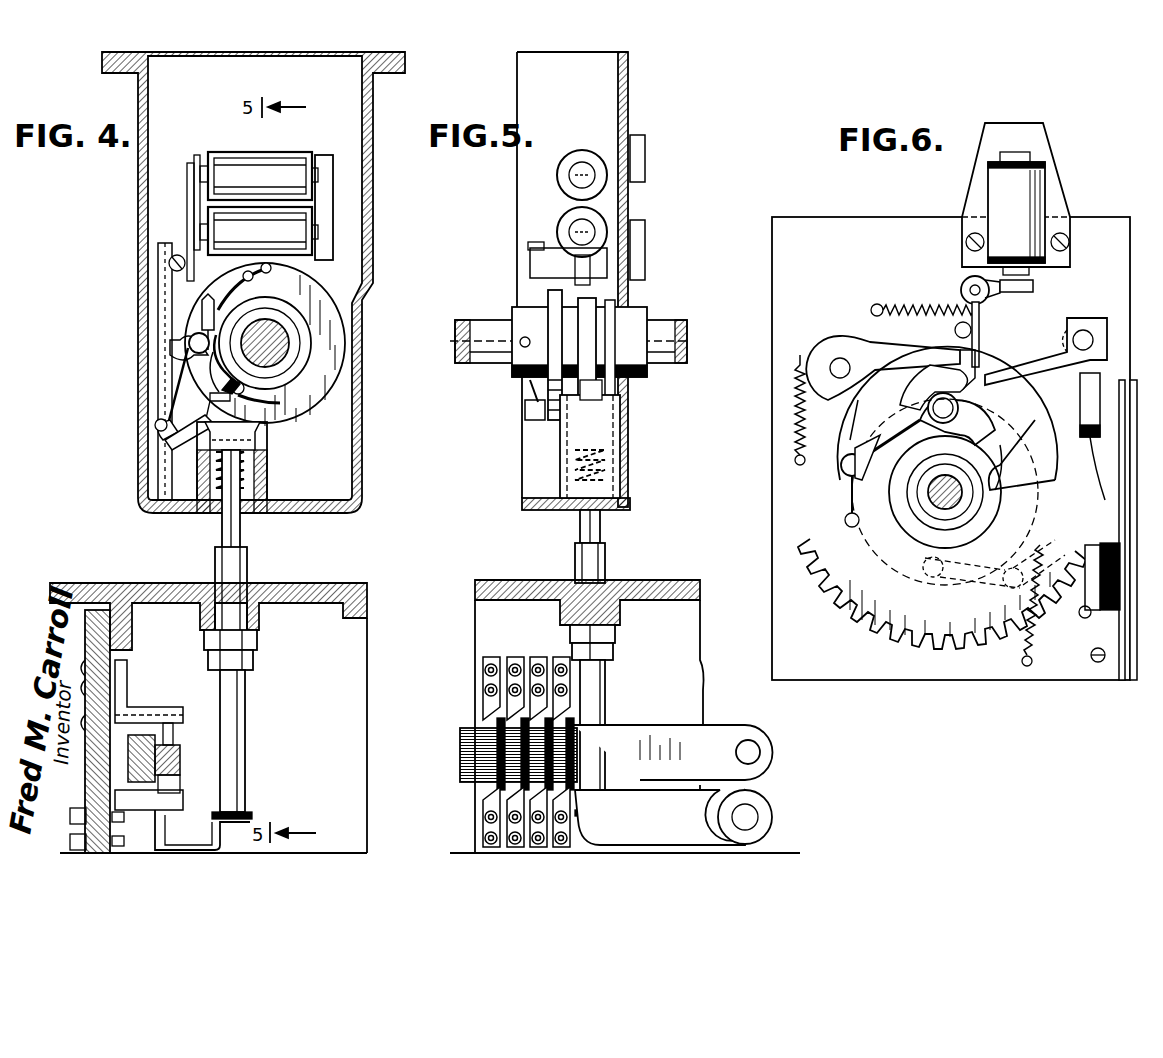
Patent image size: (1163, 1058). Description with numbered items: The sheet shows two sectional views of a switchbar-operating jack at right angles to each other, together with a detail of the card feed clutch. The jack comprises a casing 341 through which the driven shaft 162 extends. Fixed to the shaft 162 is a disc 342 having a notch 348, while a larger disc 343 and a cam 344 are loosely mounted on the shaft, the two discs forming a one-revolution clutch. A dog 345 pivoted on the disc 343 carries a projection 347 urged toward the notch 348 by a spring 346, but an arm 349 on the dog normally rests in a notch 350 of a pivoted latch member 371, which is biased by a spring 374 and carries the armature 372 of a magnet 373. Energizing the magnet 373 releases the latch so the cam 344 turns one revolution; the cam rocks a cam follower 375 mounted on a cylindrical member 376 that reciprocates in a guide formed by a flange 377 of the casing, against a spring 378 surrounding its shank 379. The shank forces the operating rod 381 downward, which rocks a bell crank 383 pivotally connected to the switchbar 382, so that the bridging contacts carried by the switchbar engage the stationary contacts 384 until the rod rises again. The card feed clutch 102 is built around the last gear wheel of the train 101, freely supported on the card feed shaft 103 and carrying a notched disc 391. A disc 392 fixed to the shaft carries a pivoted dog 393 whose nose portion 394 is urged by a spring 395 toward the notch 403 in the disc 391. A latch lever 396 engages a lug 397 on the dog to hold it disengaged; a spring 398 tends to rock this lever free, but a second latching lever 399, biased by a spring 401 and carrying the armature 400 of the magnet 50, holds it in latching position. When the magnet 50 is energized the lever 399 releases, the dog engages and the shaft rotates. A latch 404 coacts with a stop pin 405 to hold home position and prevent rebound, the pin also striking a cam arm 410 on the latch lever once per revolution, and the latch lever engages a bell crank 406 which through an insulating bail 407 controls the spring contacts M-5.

In FIG. 4, the casing 341 is at (374, 202).
In FIG. 5, the casing 341 is at (581, 281).
In FIG. 4, the latch member 371 is at (163, 322).
In FIG. 4, the armature 372 is at (190, 205).
In FIG. 4, the magnet 373 is at (240, 220).
In FIG. 5, the magnet 373 is at (567, 217).
In FIG. 4, the disc 342 is at (293, 318).
In FIG. 5, the disc 342 is at (547, 337).
In FIG. 4, the disc 343 is at (328, 357).
In FIG. 5, the disc 343 is at (553, 323).
In FIG. 4, the shaft 162 is at (273, 340).
In FIG. 5, the shaft 162 is at (658, 327).
In FIG. 4, the cam 344 is at (200, 312).
In FIG. 5, the cam 344 is at (585, 328).
In FIG. 4, the dog 345 is at (210, 367).
In FIG. 4, the spring 346 is at (227, 295).
In FIG. 4, the projection 347 is at (220, 397).
In FIG. 5, the projection 347 is at (543, 405).
In FIG. 4, the notch 348 is at (245, 394).
In FIG. 4, the arm 349 is at (208, 367).
In FIG. 4, the notch 350 is at (187, 342).
In FIG. 4, the spring 374 is at (233, 385).
In FIG. 4, the cam follower 375 is at (213, 402).
In FIG. 4, the cylindrical member 376 is at (247, 440).
In FIG. 4, the flange 377 is at (200, 473).
In FIG. 5, the flange 377 is at (560, 462).
In FIG. 4, the spring 378 is at (263, 473).
In FIG. 5, the spring 378 is at (590, 463).
In FIG. 4, the shank 379 is at (233, 527).
In FIG. 5, the shank 379 is at (600, 527).
In FIG. 4, the operating rod 381 is at (247, 695).
In FIG. 5, the operating rod 381 is at (607, 688).
In FIG. 5, the switchbar 382 is at (632, 737).
In FIG. 4, the bell crank 383 is at (173, 738).
In FIG. 5, the bell crank 383 is at (520, 728).
In FIG. 4, the stationary contacts 384 is at (140, 713).
In FIG. 5, the stationary contacts 384 is at (515, 707).
In FIG. 6, the magnet 50 is at (1033, 188).
In FIG. 6, the card feed clutch 102 is at (813, 230).
In FIG. 6, the gear train 101 is at (893, 617).
In FIG. 6, the card feed shaft 103 is at (933, 500).
In FIG. 6, the notched disc 391 is at (1100, 476).
In FIG. 6, the disc 392 is at (1045, 416).
In FIG. 6, the dog 393 is at (985, 403).
In FIG. 6, the nose portion 394 is at (1120, 457).
In FIG. 6, the spring 395 is at (920, 423).
In FIG. 6, the latch lever 396 is at (888, 350).
In FIG. 6, the lug 397 is at (975, 378).
In FIG. 6, the spring 398 is at (800, 417).
In FIG. 6, the latching lever 399 is at (982, 330).
In FIG. 6, the armature 400 is at (1033, 285).
In FIG. 6, the spring 401 is at (902, 307).
In FIG. 6, the notch 403 is at (992, 492).
In FIG. 6, the latch 404 is at (948, 580).
In FIG. 6, the stop pin 405 is at (933, 572).
In FIG. 6, the bell crank 406 is at (1047, 335).
In FIG. 6, the insulating bail 407 is at (1100, 405).
In FIG. 6, the cam arm 410 is at (847, 433).
In FIG. 6, the contacts M-5 is at (1100, 493).